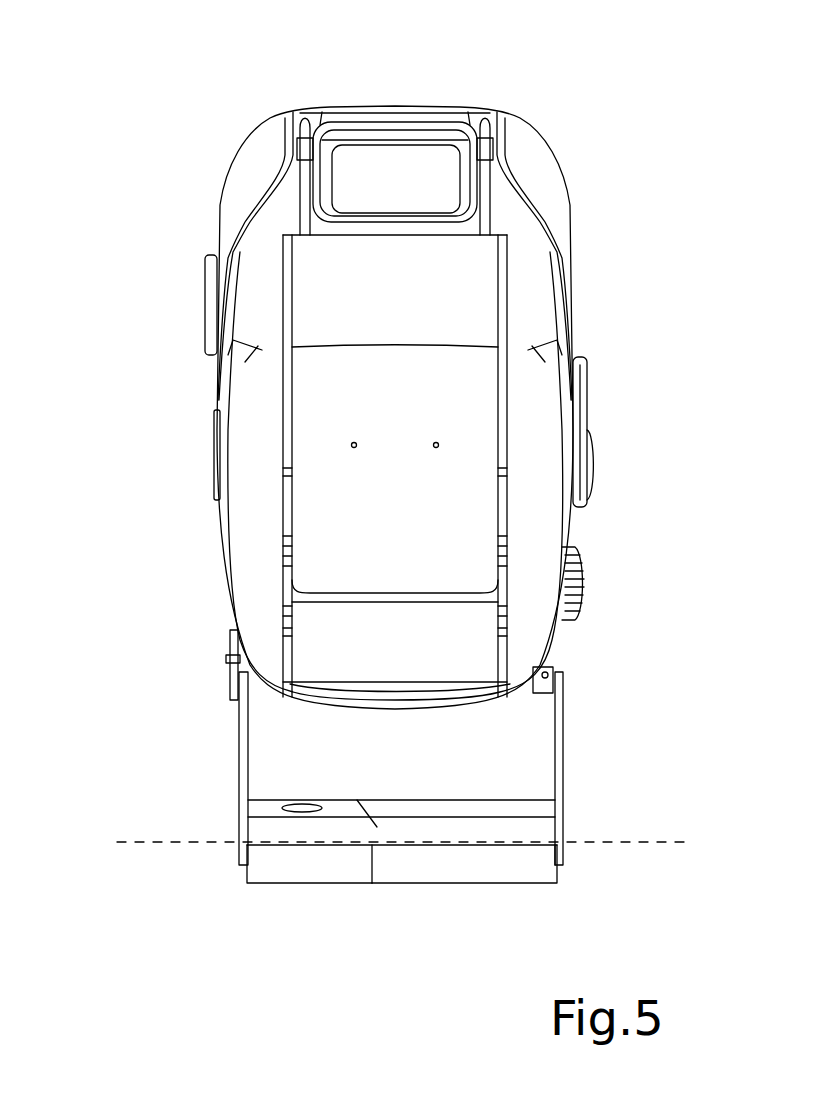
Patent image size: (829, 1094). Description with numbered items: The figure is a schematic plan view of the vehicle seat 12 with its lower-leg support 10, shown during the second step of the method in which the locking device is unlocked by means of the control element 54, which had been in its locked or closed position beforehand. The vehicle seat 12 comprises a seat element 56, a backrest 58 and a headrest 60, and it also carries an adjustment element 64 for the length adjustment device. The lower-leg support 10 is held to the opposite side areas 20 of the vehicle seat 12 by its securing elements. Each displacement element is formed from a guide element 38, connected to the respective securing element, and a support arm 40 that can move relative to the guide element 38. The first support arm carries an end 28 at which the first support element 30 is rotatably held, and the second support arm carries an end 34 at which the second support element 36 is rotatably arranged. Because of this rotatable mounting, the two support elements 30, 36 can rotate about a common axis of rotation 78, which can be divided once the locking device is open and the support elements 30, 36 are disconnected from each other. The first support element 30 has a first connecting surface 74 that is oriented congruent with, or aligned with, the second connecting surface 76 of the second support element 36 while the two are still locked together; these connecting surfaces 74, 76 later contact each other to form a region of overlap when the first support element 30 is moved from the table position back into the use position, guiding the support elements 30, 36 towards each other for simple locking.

The lower-leg support 10 is at (647, 852).
The vehicle seat 12 is at (603, 223).
The side areas 20 is at (213, 492).
The end 28 is at (240, 845).
The first support element 30 is at (288, 863).
The end 34 is at (565, 847).
The second support element 36 is at (480, 865).
The guide element 38 is at (228, 657).
The support arm 40 is at (243, 752).
The control element 54 is at (302, 805).
The seat element 56 is at (413, 497).
The backrest 58 is at (240, 205).
The headrest 60 is at (395, 158).
The adjustment element 64 is at (585, 580).
The first connecting surface 74 is at (366, 830).
The second connecting surface 76 is at (368, 833).
The axis of rotation 78 is at (150, 840).